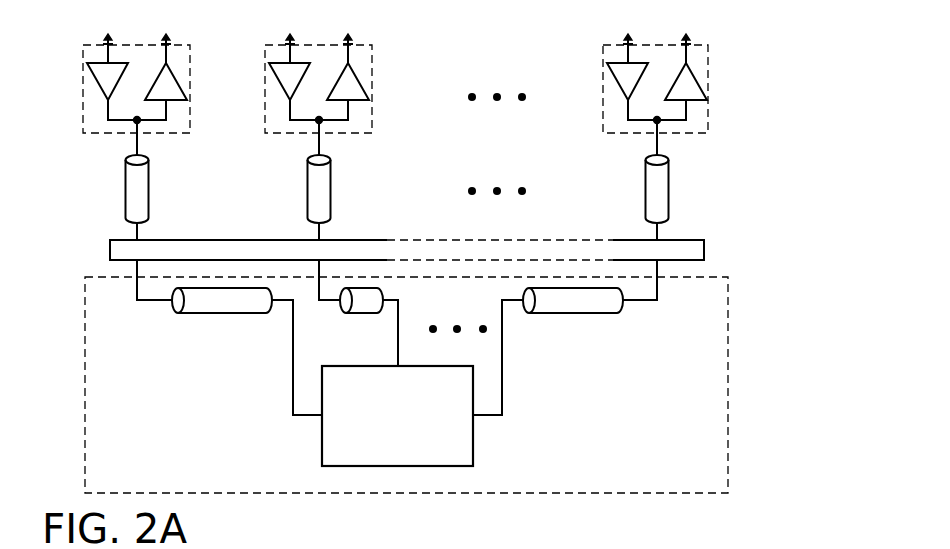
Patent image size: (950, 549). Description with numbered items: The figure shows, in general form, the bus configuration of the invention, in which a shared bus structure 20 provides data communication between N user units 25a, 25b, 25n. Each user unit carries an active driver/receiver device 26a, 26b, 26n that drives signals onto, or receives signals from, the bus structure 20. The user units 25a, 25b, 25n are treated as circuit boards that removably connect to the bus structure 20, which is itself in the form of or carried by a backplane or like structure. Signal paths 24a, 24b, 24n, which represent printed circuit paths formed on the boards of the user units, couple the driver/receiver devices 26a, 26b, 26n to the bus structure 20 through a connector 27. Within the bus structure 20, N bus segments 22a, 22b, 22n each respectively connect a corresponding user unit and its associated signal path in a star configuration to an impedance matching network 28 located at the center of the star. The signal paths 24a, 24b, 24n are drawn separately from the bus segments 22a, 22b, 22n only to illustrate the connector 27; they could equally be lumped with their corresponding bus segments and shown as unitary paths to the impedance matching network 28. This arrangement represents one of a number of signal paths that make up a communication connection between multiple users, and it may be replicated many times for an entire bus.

The bus structure 20 is at (728, 325).
The bus segment 22a is at (228, 314).
The bus segment 22b is at (362, 314).
The bus segment 22n is at (573, 314).
The signal path 24a is at (125, 186).
The signal path 24b is at (331, 180).
The signal path 24n is at (669, 188).
The user unit 25a is at (134, 73).
The user unit 25b is at (326, 73).
The user unit 25n is at (685, 73).
The active driver/receiver device 26a is at (109, 86).
The active driver/receiver device 26b is at (295, 86).
The active driver/receiver device 26n is at (695, 72).
The connector 27 is at (704, 246).
The impedance matching network 28 is at (473, 450).